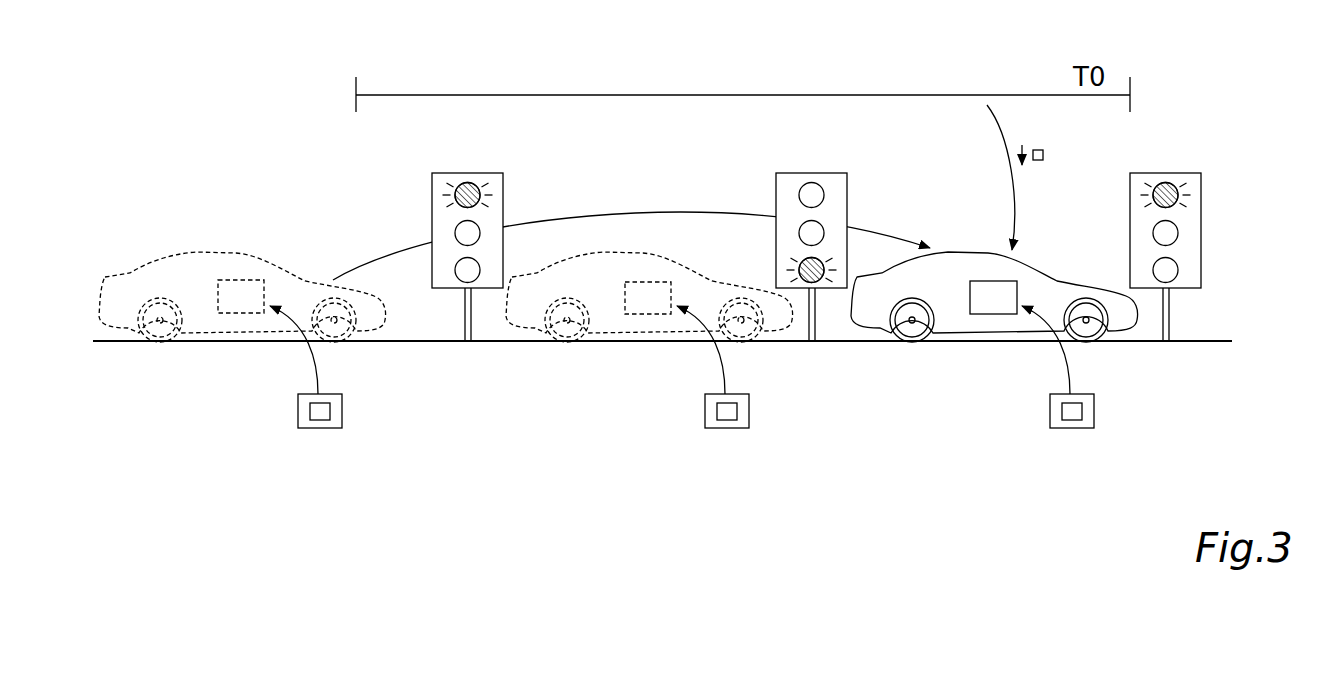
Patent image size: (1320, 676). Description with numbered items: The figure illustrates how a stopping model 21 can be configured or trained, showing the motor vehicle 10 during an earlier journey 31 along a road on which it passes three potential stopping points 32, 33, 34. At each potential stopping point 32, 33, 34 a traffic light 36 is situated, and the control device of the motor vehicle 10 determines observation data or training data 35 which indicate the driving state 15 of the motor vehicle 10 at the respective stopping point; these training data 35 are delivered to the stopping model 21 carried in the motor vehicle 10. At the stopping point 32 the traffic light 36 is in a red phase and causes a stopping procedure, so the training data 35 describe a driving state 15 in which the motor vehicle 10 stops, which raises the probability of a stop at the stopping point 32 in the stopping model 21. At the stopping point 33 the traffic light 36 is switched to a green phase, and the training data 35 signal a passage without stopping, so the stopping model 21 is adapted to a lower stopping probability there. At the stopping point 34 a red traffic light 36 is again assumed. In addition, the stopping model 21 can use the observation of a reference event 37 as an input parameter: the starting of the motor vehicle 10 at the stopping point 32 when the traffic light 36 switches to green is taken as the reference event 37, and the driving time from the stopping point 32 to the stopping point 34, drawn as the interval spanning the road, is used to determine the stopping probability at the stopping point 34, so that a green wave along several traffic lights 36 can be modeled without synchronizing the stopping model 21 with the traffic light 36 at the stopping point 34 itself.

The motor vehicle 10 is at (255, 258).
The driving operational state 15 is at (298, 410).
The stopping model 21 is at (218, 297).
The journey 31 is at (247, 110).
The potential stopping point 32 is at (475, 362).
The potential stopping point 33 is at (817, 352).
The potential stopping point 34 is at (1170, 352).
The training data 35 is at (320, 428).
The traffic light 36 is at (495, 173).
The reference event 37 is at (1045, 155).